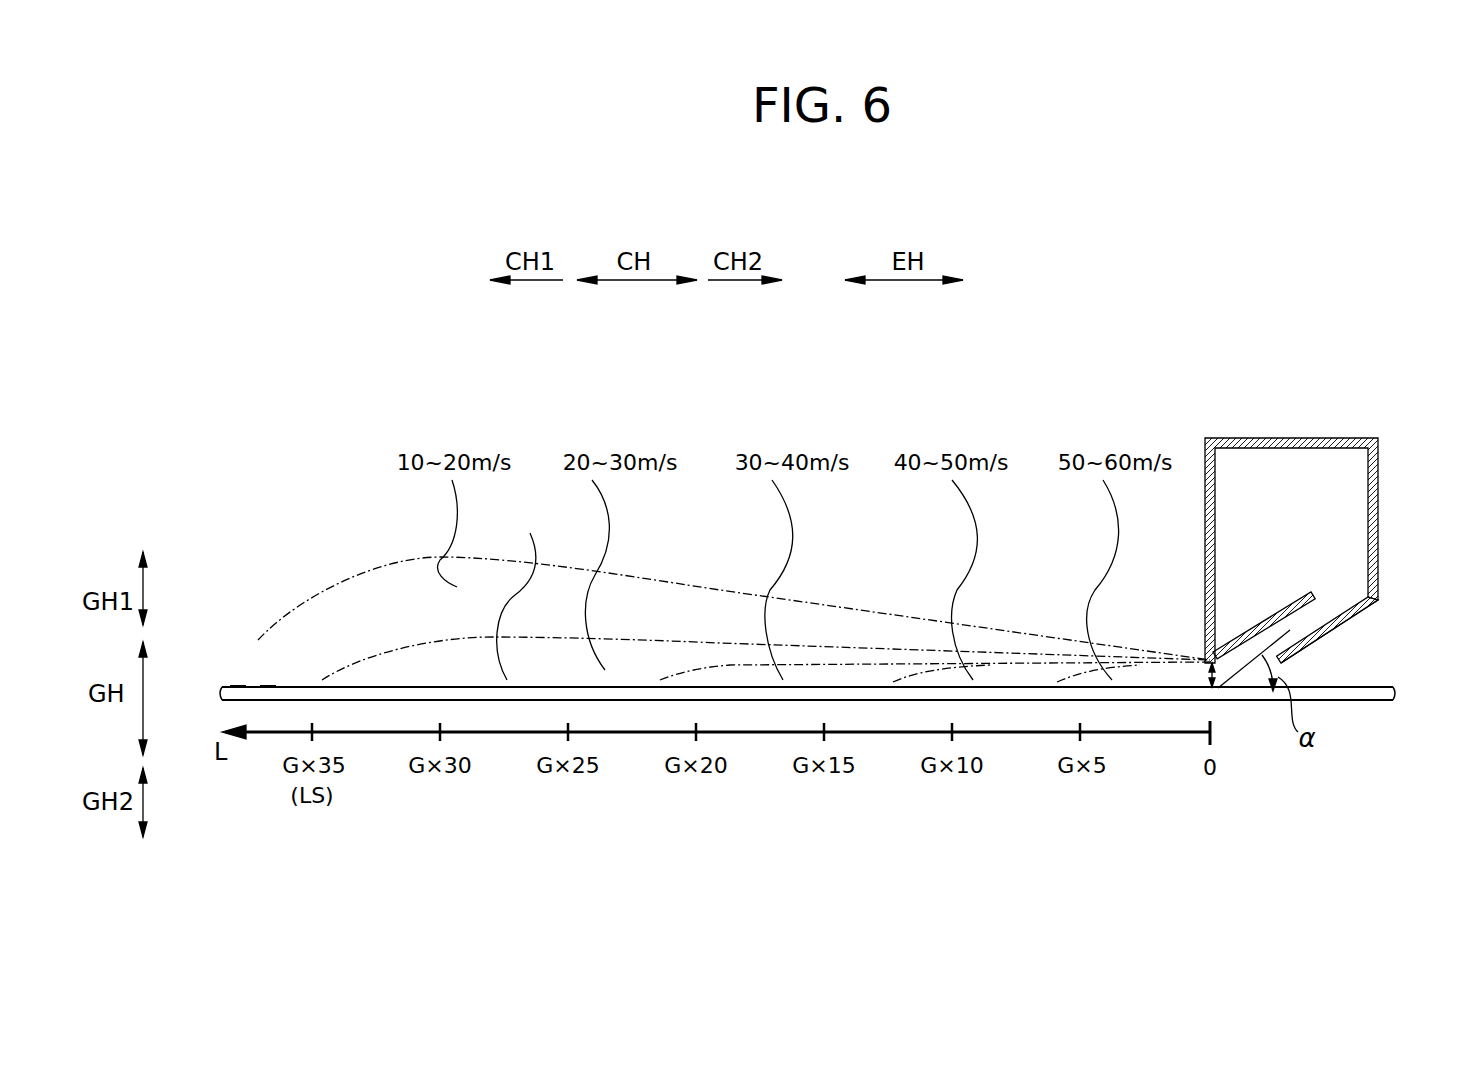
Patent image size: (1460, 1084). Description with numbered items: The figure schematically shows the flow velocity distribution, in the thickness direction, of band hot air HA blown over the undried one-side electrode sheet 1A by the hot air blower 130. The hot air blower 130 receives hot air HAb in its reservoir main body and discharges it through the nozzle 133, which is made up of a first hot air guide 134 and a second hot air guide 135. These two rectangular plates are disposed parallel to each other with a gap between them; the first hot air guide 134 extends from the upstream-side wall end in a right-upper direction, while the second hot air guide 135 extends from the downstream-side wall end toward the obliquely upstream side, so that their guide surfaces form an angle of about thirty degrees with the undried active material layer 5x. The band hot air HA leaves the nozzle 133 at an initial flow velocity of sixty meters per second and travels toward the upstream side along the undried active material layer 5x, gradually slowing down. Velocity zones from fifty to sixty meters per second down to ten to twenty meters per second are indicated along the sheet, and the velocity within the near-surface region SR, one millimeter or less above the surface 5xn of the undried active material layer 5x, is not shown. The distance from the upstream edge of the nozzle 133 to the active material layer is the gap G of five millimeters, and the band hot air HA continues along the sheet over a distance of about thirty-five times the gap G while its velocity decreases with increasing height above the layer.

The hot air blower 130 is at (1256, 433).
The nozzle 133 is at (1350, 630).
The first hot air guide 134 is at (1265, 618).
The second hot air guide 135 is at (1313, 640).
The undried one-side electrode sheet 1A is at (249, 686).
The undried active material layer 5x is at (268, 687).
The surface of the undried active material layer 5xn is at (238, 687).
The band hot air HA is at (414, 557).
The hot air HAb is at (1323, 502).
The near-surface region SR is at (523, 594).
The gap G is at (1208, 676).